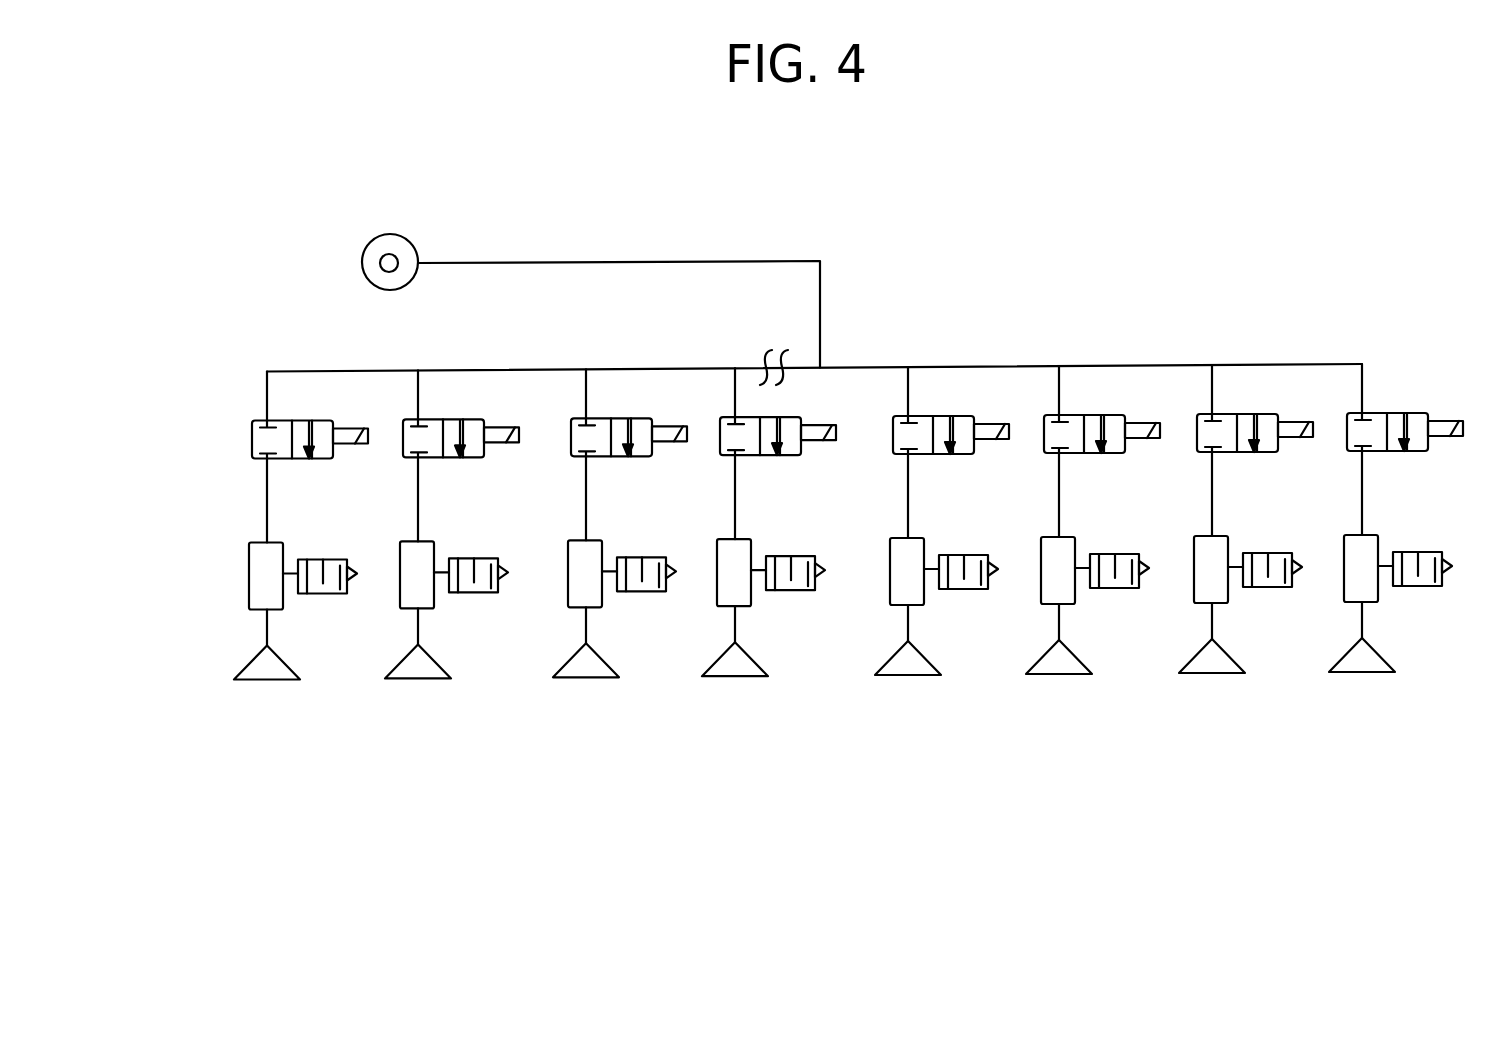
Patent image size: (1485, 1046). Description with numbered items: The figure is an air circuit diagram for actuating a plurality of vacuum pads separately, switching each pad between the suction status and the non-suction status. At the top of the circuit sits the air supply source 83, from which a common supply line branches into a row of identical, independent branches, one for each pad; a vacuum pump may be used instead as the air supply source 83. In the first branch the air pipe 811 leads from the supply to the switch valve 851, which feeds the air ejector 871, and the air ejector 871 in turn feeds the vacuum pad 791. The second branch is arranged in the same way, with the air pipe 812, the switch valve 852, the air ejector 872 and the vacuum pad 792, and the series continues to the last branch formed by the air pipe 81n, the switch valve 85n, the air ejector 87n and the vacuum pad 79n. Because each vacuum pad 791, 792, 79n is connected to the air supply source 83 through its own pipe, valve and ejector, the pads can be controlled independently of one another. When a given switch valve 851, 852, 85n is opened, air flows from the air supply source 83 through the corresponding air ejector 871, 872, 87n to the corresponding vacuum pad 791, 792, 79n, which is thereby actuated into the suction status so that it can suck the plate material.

The air supply source 83 is at (402, 235).
The air pipe 81n is at (266, 407).
The switch valve 85n is at (252, 446).
The air ejector 87n is at (248, 593).
The vacuum pad 79n is at (265, 681).
The air pipe 812 is at (1212, 392).
The switch valve 852 is at (1216, 452).
The air ejector 872 is at (1225, 593).
The vacuum pad 792 is at (1212, 673).
The air pipe 811 is at (1362, 377).
The switch valve 851 is at (1397, 452).
The air ejector 871 is at (1375, 592).
The vacuum pad 791 is at (1363, 673).